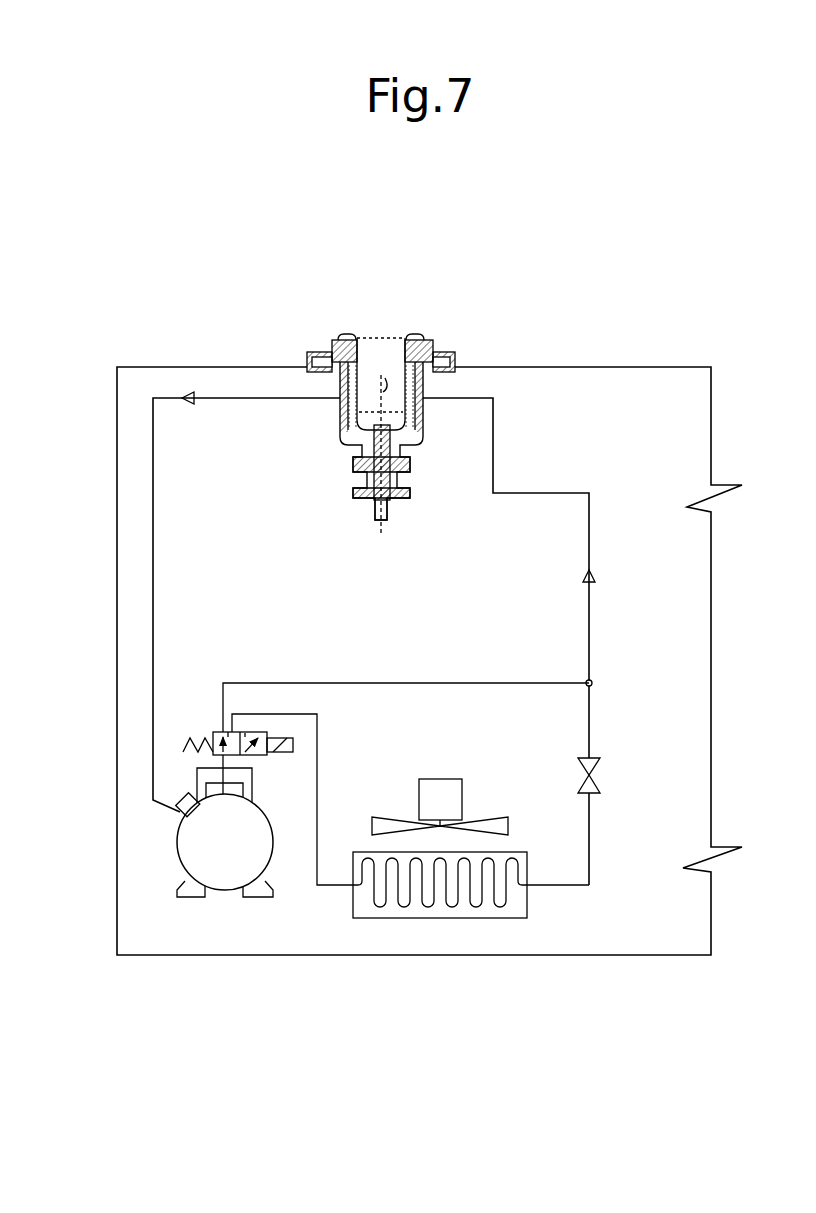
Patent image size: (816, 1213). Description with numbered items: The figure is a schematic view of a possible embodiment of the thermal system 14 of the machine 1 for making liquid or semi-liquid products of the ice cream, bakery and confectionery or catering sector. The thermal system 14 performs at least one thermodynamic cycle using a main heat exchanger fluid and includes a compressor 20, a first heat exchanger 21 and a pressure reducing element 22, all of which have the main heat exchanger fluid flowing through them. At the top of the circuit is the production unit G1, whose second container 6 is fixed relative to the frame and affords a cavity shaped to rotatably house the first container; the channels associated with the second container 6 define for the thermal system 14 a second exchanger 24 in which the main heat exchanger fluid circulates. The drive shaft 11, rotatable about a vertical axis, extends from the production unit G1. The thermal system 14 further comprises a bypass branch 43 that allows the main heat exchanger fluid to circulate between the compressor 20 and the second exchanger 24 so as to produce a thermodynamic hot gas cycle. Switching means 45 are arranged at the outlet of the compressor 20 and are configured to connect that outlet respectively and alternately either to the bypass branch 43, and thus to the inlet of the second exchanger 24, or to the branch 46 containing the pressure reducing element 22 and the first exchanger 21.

The machine 1 is at (228, 340).
The production unit G1 is at (393, 405).
The thermal system 14 is at (540, 450).
The second exchanger 24 is at (328, 417).
The second container 6 is at (327, 442).
The drive shaft 11 is at (395, 512).
The bypass branch 43 is at (388, 683).
The switching means 45 is at (212, 730).
The compressor 20 is at (222, 840).
The first heat exchanger 21 is at (492, 932).
The branch 46 is at (557, 885).
The pressure reducing element 22 is at (600, 775).